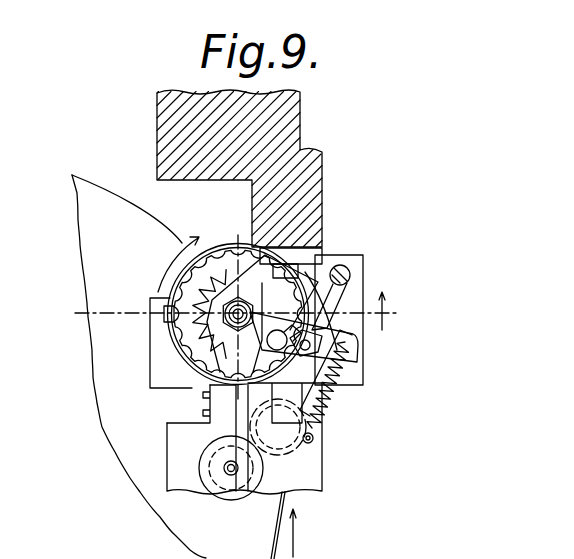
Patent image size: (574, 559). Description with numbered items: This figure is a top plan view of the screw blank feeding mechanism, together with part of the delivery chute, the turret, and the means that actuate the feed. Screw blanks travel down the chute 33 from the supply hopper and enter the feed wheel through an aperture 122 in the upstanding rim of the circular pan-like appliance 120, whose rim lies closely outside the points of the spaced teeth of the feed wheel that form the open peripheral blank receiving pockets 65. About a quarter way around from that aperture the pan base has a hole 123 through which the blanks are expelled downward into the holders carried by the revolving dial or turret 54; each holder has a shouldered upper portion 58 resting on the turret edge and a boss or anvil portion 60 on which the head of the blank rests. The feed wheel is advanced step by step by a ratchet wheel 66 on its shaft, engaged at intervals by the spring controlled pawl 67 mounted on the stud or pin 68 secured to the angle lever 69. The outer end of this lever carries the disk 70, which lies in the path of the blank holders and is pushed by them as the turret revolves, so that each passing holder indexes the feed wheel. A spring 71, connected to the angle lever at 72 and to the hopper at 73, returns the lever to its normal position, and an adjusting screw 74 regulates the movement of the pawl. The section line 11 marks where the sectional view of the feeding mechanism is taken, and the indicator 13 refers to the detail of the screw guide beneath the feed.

The section line 11— 11 is at (236, 396).
The section line 13 is at (357, 265).
The chute 33 is at (247, 491).
The dial or turret 54 is at (231, 462).
The shouldered upper portion 58 is at (250, 500).
The boss or anvil portion 60 is at (226, 468).
The blank receiving pockets 65 is at (176, 338).
The ratchet wheel 66 is at (219, 244).
The spring controlled pawl 67 is at (292, 356).
The stud or pin 68 is at (318, 345).
The angle lever 69 is at (335, 403).
The disk 70 is at (312, 440).
The spring 71 is at (320, 412).
The spring connection on angle lever 72 is at (348, 348).
The spring connection on hopper 73 is at (299, 525).
The adjusting screw 74 is at (305, 308).
The circular pan-like appliance 120 is at (177, 267).
The aperture 122 is at (234, 393).
The hole 123 is at (163, 322).